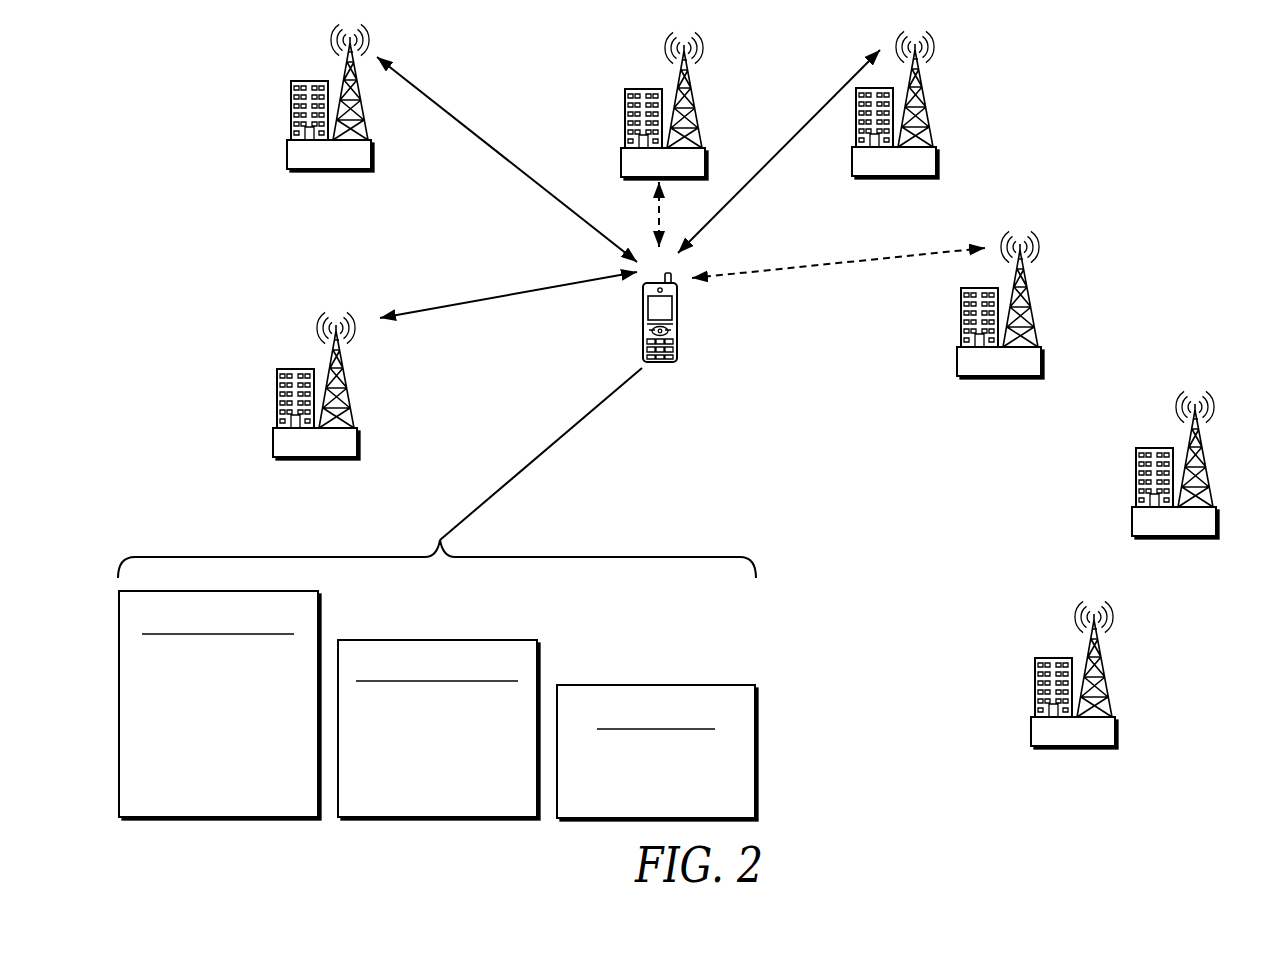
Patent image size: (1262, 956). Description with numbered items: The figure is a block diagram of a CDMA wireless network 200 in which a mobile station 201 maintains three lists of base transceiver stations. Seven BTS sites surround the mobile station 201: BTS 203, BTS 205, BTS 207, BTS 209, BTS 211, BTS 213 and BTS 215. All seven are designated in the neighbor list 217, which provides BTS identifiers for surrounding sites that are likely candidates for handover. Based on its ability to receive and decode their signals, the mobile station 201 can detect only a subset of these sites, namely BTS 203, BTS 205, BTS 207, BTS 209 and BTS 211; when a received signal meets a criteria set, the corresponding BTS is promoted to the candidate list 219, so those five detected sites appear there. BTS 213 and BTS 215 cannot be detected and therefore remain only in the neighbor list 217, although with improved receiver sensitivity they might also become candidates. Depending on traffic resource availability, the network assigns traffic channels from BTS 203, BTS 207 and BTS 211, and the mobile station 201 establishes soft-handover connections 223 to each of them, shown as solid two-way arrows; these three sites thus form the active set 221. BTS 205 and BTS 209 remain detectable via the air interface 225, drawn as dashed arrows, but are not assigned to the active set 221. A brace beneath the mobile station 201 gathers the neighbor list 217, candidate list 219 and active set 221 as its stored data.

The wireless communication system 200 is at (1256, 117).
The mobile station 201 is at (643, 320).
The BTS 203 is at (287, 155).
The BTS 205 is at (621, 162).
The BTS 207 is at (852, 161).
The BTS 209 is at (957, 358).
The BTS 211 is at (273, 442).
The BTS 213 is at (1132, 519).
The BTS 215 is at (1031, 731).
The neighbor list 217 is at (318, 606).
The candidate list 219 is at (537, 655).
The active set 221 is at (755, 703).
The soft-handover connections 223 is at (511, 157).
The air interface 225 is at (656, 208).